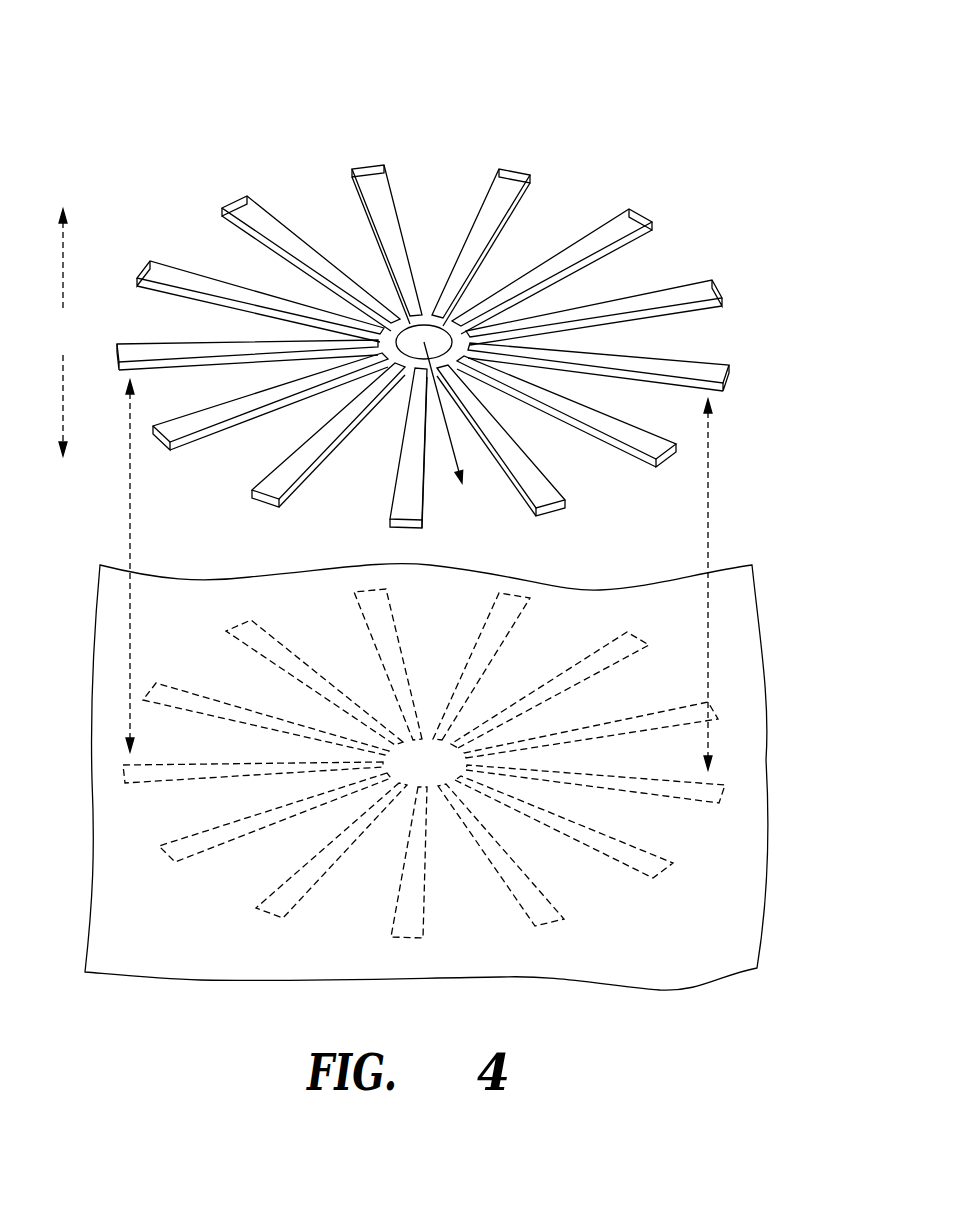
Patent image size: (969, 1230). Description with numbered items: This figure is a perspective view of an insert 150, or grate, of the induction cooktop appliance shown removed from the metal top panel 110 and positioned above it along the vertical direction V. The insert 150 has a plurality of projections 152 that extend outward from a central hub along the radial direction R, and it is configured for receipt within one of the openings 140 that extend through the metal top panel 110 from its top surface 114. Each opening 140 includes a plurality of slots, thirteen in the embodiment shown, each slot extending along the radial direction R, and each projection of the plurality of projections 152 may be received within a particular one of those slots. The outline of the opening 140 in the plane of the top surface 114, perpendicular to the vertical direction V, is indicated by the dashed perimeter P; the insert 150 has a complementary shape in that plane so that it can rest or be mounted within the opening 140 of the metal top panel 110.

The insert 150 is at (423, 271).
The plurality of projections 152 is at (508, 180).
The openings 140 is at (452, 757).
The top surface 114 is at (163, 947).
The metal top panel 110 is at (426, 805).
The radial direction R is at (453, 448).
The vertical direction V is at (63, 332).
The perimeter P is at (637, 847).